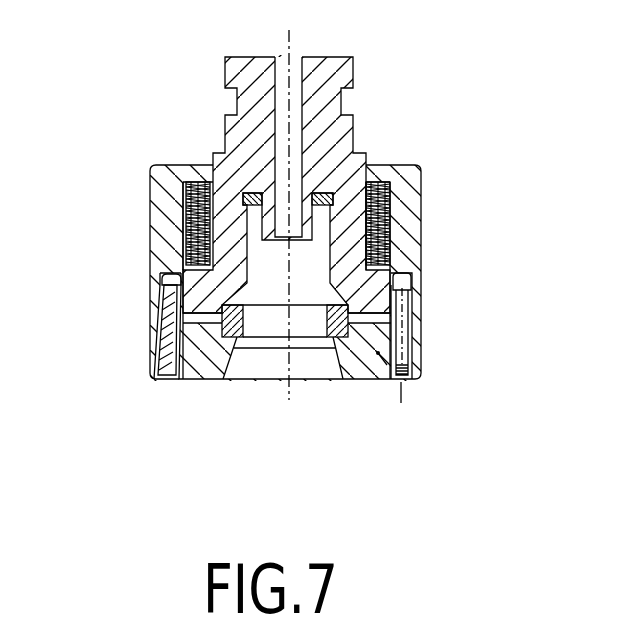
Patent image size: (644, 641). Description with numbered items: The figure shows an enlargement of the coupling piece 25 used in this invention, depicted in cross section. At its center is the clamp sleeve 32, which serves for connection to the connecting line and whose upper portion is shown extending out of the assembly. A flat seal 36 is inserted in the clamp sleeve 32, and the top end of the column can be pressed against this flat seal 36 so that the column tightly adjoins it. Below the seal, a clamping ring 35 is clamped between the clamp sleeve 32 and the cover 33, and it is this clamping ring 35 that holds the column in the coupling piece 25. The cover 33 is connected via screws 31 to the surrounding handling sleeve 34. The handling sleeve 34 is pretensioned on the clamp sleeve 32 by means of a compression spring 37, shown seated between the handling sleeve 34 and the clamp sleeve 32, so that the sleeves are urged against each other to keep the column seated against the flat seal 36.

The coupling piece 25 is at (427, 118).
The screws 31 is at (410, 344).
The clamp sleeve 32 is at (235, 150).
The cover 33 is at (400, 387).
The handling sleeve 34 is at (398, 230).
The clamping ring 35 is at (340, 383).
The flat seal 36 is at (213, 183).
The compression spring 37 is at (195, 230).